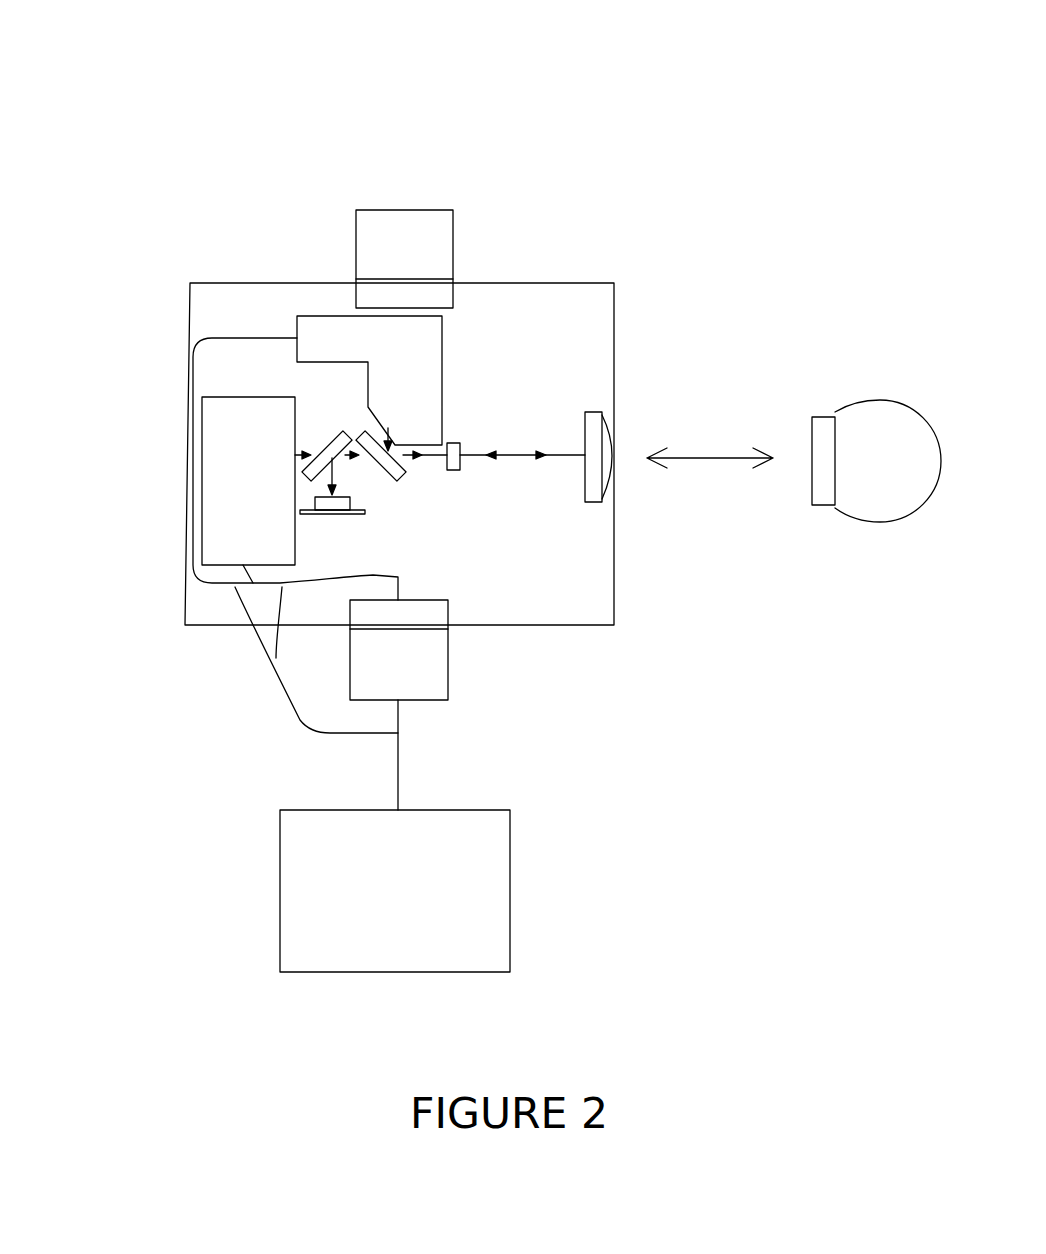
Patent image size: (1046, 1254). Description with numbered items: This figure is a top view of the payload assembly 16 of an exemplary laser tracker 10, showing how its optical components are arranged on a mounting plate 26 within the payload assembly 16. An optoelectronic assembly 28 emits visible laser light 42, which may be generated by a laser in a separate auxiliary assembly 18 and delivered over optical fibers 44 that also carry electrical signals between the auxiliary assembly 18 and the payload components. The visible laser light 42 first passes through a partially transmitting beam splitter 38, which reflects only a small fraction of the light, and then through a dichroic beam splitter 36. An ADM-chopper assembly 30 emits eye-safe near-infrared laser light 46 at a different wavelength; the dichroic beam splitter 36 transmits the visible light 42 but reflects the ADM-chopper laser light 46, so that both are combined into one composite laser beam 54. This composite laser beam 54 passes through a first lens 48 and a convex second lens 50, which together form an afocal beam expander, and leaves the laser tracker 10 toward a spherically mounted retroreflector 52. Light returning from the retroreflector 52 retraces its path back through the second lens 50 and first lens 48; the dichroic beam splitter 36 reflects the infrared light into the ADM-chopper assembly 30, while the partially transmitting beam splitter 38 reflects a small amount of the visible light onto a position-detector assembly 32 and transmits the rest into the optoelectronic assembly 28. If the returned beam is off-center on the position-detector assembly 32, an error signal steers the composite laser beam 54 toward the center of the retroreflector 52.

The laser tracker 10 is at (292, 112).
The payload assembly 16 is at (798, 282).
The auxiliary assembly 18 is at (510, 890).
The mounting plate 26 is at (185, 625).
The optoelectronic assembly 28 is at (200, 537).
The ADM-chopper assembly 30 is at (297, 317).
The position-detector assembly 32 is at (365, 513).
The dichroic beam splitter 36 is at (407, 473).
The partially transmitting beam splitter 38 is at (345, 471).
The visible laser light 42 is at (309, 452).
The optical fibers and electrical wires 44 is at (302, 736).
The ADM-chopper laser light 46 is at (443, 400).
The first lens 48 is at (460, 447).
The second lens 50 is at (602, 417).
The spherically mounted retroreflector 52 is at (872, 522).
The composite laser beam 54 is at (710, 458).